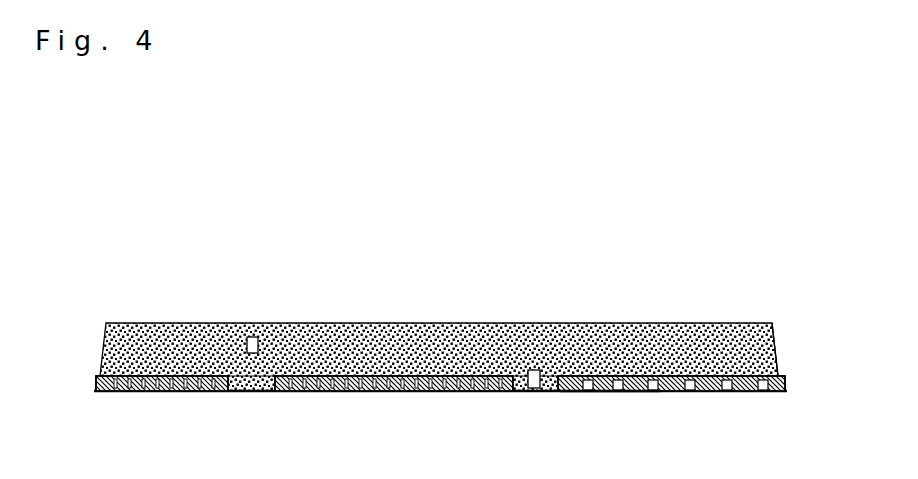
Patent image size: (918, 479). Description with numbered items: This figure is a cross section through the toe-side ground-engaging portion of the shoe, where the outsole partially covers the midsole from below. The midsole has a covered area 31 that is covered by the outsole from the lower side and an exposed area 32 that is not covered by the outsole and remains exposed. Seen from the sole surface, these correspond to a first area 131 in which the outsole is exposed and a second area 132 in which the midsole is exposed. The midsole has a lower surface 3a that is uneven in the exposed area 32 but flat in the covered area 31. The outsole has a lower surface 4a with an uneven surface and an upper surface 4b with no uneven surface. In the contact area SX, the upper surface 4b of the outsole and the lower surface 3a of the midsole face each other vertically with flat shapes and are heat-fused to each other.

The covered area 31 is at (222, 312).
The exposed area 32 is at (280, 312).
The first area 131 is at (223, 402).
The second area 132 is at (278, 402).
The contact area SX is at (162, 375).
The lower surface 3a is at (607, 392).
The lower surface 4a is at (746, 395).
The upper surface 4b is at (767, 377).